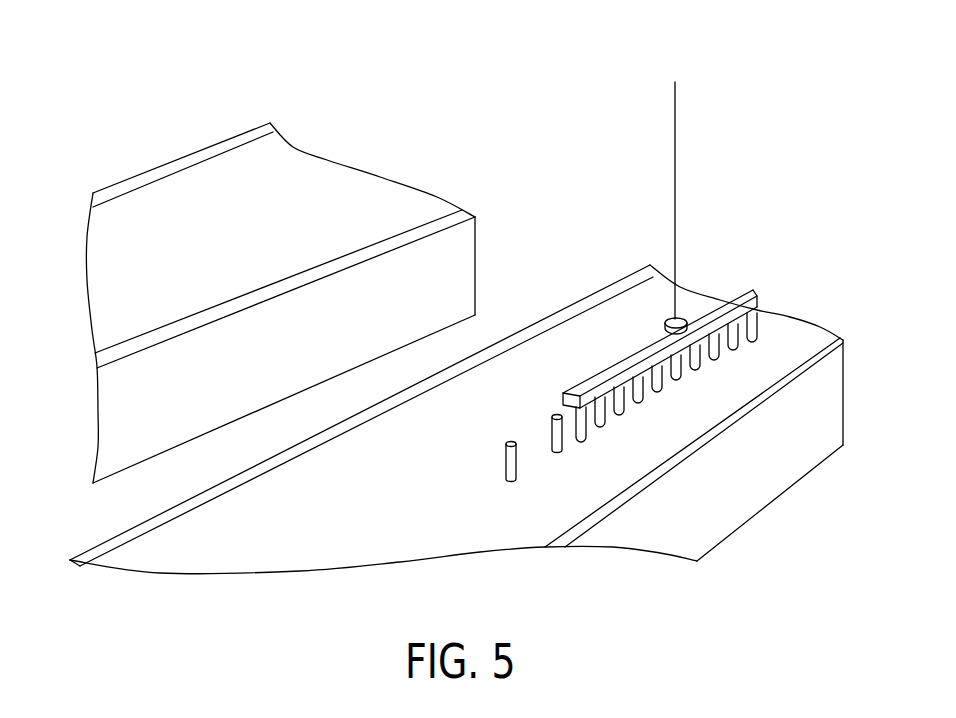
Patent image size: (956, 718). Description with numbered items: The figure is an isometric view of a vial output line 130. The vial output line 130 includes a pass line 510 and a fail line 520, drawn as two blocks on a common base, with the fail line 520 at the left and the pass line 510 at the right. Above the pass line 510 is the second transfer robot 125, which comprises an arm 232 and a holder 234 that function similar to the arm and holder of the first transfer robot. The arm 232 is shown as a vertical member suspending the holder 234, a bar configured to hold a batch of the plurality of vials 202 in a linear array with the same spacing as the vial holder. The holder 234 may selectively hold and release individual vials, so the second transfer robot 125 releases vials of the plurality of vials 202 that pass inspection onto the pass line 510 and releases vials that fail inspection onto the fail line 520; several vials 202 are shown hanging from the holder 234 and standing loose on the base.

The vial output line 130 is at (134, 96).
The fail line 520 is at (287, 180).
The second transfer robot 125 is at (711, 99).
The arm 232 is at (677, 143).
The holder 234 is at (740, 290).
The pass line 510 is at (798, 337).
The plurality of vials 202 is at (603, 466).